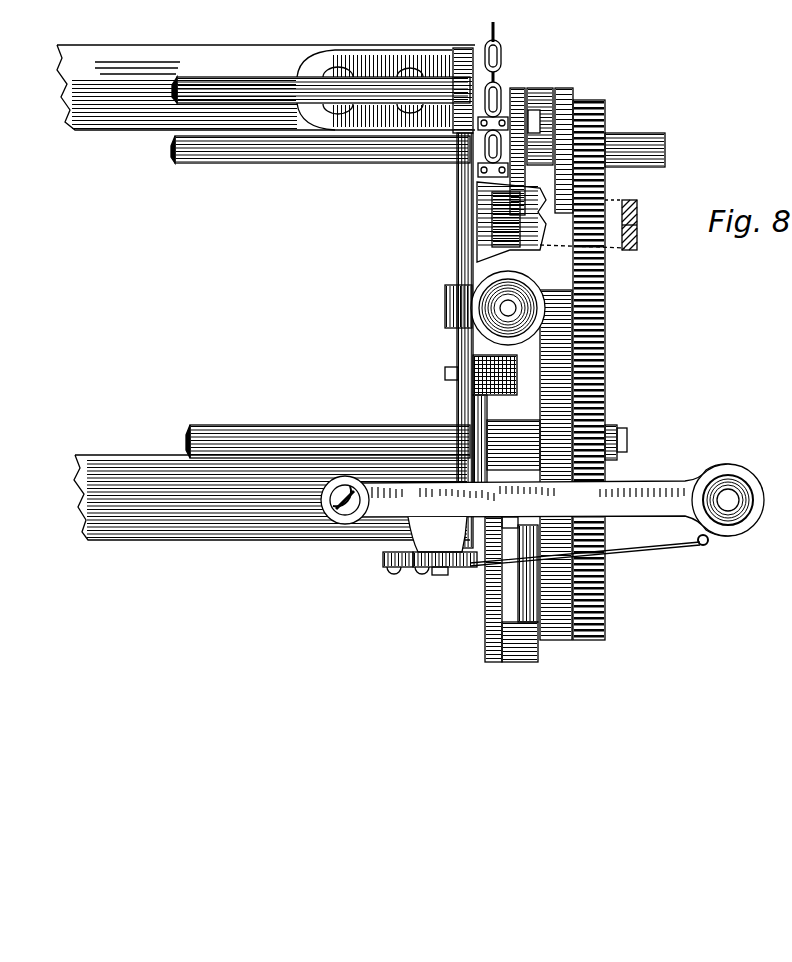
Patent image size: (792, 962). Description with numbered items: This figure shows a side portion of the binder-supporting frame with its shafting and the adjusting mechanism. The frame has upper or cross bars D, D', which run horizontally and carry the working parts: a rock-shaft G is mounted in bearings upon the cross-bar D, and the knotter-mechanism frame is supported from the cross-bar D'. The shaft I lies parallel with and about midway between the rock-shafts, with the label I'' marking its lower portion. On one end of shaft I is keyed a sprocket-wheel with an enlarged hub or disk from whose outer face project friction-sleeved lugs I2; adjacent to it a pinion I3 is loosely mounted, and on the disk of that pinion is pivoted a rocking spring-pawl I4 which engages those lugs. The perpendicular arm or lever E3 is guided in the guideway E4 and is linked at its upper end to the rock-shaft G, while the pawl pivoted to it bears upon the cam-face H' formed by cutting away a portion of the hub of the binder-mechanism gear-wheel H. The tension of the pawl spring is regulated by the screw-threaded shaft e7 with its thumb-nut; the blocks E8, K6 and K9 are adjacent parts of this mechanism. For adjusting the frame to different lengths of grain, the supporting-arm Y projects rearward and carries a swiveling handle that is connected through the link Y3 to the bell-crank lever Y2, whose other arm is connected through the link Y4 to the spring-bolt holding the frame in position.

The upper cross bar D is at (266, 98).
The rock-shaft G is at (237, 82).
The shaft I is at (320, 160).
The friction-sleeved lugs I2 is at (537, 88).
The rocking spring-pawl I4 is at (558, 104).
The pinion I3 is at (600, 104).
The hatched block K9 is at (637, 207).
The guideway E4 is at (591, 238).
The arm or lever E3 is at (500, 209).
The screw-threaded shaft e7 is at (530, 320).
The small block E8 is at (478, 328).
The cross-hatched block K6 is at (481, 384).
The cam-face H' is at (328, 429).
The lower shaft label I'' is at (246, 416).
The upper cross bar D' is at (272, 512).
The supporting-arm Y is at (739, 494).
The link Y4 is at (389, 572).
The bell-crank lever Y2 is at (414, 572).
The link Y3 is at (650, 551).
The binder-mechanism gear-wheel H is at (555, 589).